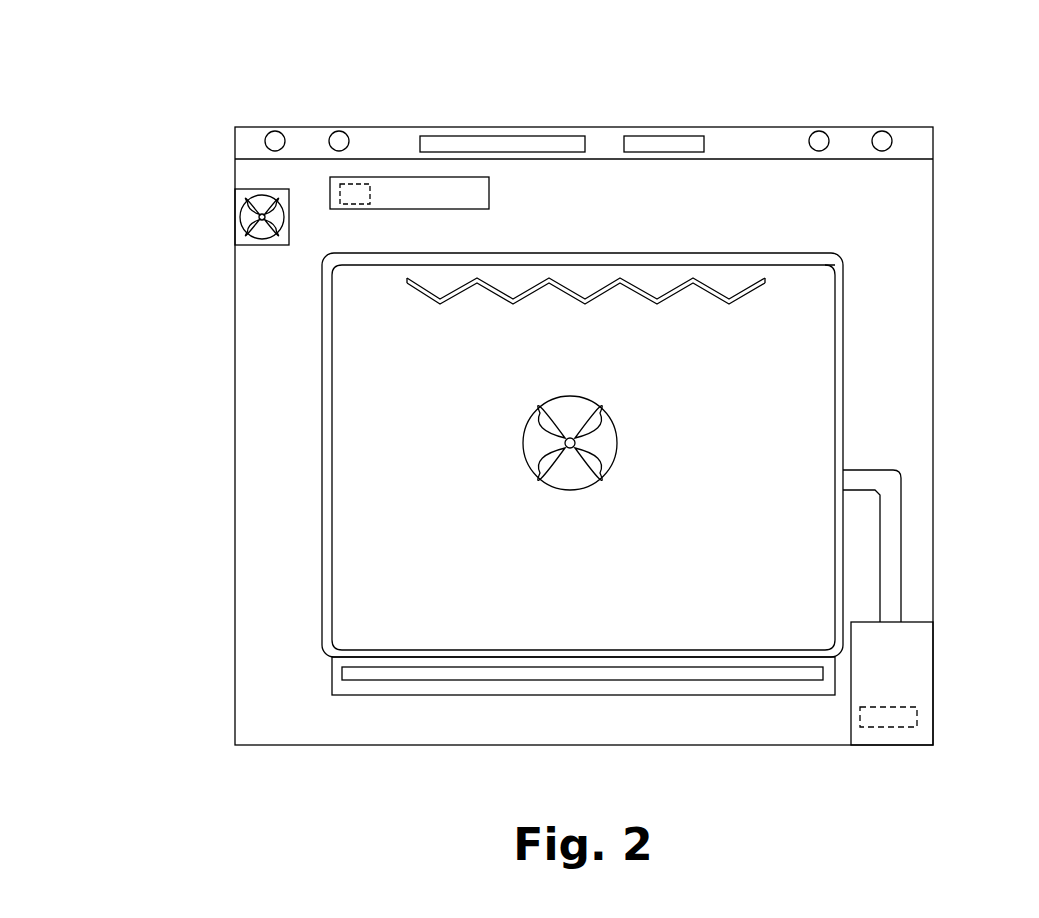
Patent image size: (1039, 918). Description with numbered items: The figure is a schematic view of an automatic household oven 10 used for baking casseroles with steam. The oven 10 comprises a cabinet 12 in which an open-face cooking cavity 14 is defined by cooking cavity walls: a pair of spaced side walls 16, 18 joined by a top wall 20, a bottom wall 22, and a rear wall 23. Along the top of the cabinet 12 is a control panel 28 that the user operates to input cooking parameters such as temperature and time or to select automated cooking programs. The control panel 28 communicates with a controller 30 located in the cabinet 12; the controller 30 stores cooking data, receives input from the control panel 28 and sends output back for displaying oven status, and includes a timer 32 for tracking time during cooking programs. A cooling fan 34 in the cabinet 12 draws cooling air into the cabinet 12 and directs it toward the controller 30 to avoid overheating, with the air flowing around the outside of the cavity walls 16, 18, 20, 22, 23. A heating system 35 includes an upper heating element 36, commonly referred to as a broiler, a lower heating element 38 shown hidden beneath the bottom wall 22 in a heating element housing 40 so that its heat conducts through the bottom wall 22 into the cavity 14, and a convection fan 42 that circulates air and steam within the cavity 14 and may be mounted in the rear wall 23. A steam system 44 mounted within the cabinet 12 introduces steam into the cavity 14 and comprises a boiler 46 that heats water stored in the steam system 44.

The automatic household oven 10 is at (249, 98).
The cabinet 12 is at (235, 412).
The cooking cavity 14 is at (609, 561).
The side wall 16 is at (831, 418).
The side wall 18 is at (333, 478).
The top wall 20 is at (752, 264).
The bottom wall 22 is at (436, 648).
The rear wall 23 is at (790, 518).
The control panel 28 is at (595, 127).
The controller 30 is at (393, 177).
The timer 32 is at (355, 184).
The cooling fan 34 is at (262, 246).
The heating system 35 is at (501, 296).
The upper heating element 36 is at (750, 292).
The lower heating element 38 is at (499, 675).
The heating element housing 40 is at (838, 683).
The convection fan 42 is at (617, 430).
The steam system 44 is at (913, 622).
The boiler 46 is at (917, 707).